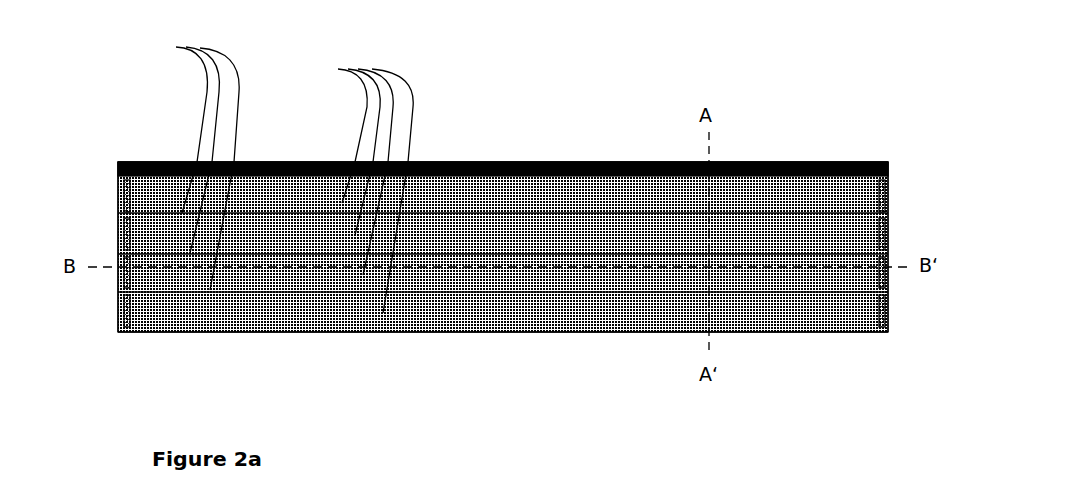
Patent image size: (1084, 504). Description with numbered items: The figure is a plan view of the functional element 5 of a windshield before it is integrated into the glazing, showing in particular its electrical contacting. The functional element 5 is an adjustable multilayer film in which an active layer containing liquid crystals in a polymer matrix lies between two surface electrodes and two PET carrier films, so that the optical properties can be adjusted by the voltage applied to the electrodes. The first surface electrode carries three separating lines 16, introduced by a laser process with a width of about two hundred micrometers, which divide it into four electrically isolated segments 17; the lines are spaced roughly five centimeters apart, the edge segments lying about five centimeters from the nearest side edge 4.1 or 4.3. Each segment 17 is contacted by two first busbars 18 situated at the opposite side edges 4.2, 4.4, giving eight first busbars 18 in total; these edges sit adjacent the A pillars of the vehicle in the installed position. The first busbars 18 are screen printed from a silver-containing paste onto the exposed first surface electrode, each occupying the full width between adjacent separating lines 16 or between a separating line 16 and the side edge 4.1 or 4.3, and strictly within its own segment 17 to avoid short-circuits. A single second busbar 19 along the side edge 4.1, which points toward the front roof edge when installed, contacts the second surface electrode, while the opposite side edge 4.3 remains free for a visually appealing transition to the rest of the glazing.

The functional element 5 is at (532, 357).
The second busbar 19 is at (559, 168).
The side edge 4.1 is at (506, 161).
The side edge 4.2 is at (889, 316).
The side edge 4.3 is at (407, 333).
The side edge 4.4 is at (118, 204).
The first busbars 18 is at (127, 322).
The separating lines 16 is at (178, 47).
The segments 17 is at (372, 69).